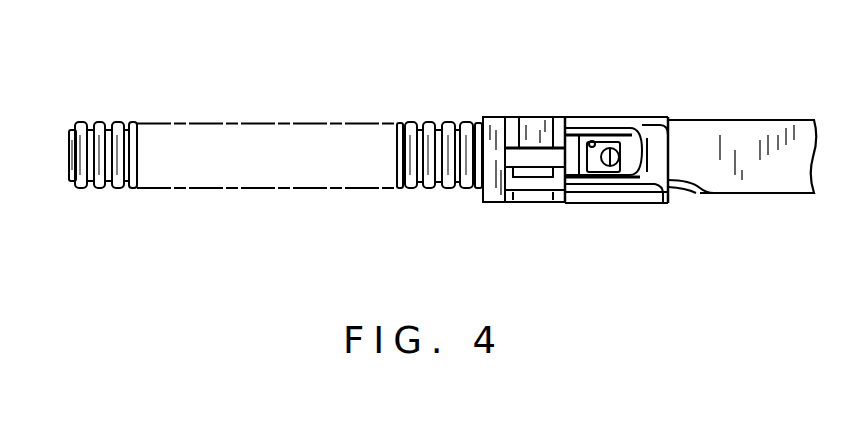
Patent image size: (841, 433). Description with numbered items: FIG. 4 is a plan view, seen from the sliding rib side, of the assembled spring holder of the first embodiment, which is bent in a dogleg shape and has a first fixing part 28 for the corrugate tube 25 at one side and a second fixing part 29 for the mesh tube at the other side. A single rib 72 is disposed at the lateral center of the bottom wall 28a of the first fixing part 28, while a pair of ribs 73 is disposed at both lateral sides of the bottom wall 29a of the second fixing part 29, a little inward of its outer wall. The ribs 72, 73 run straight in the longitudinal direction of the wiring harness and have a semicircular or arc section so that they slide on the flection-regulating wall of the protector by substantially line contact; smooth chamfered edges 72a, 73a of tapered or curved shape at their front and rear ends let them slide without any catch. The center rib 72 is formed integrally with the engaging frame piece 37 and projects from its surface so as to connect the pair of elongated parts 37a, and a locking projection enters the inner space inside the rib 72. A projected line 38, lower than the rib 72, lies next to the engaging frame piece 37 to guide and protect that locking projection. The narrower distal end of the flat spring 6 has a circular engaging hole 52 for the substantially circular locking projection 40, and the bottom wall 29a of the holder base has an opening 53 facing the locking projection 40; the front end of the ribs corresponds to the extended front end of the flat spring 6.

The flat spring 6 is at (776, 194).
The corrugate tube 25 is at (428, 190).
The first fixing part 28 is at (532, 117).
The bottom wall of the first fixing part 28a is at (525, 117).
The second fixing part 29 is at (612, 175).
The bottom wall of the second fixing part 29a is at (661, 199).
The engaging frame piece 37 is at (548, 180).
The elongated parts of the engaging frame piece 37a is at (483, 117).
The projected line 38 is at (490, 203).
The locking projection 40 is at (606, 193).
The circular engaging hole 52 is at (617, 125).
The opening 53 is at (594, 142).
The rib 72 is at (536, 166).
The chamfered edges 72a is at (517, 192).
The ribs 73 is at (650, 201).
The chamfered edges 73a is at (697, 197).